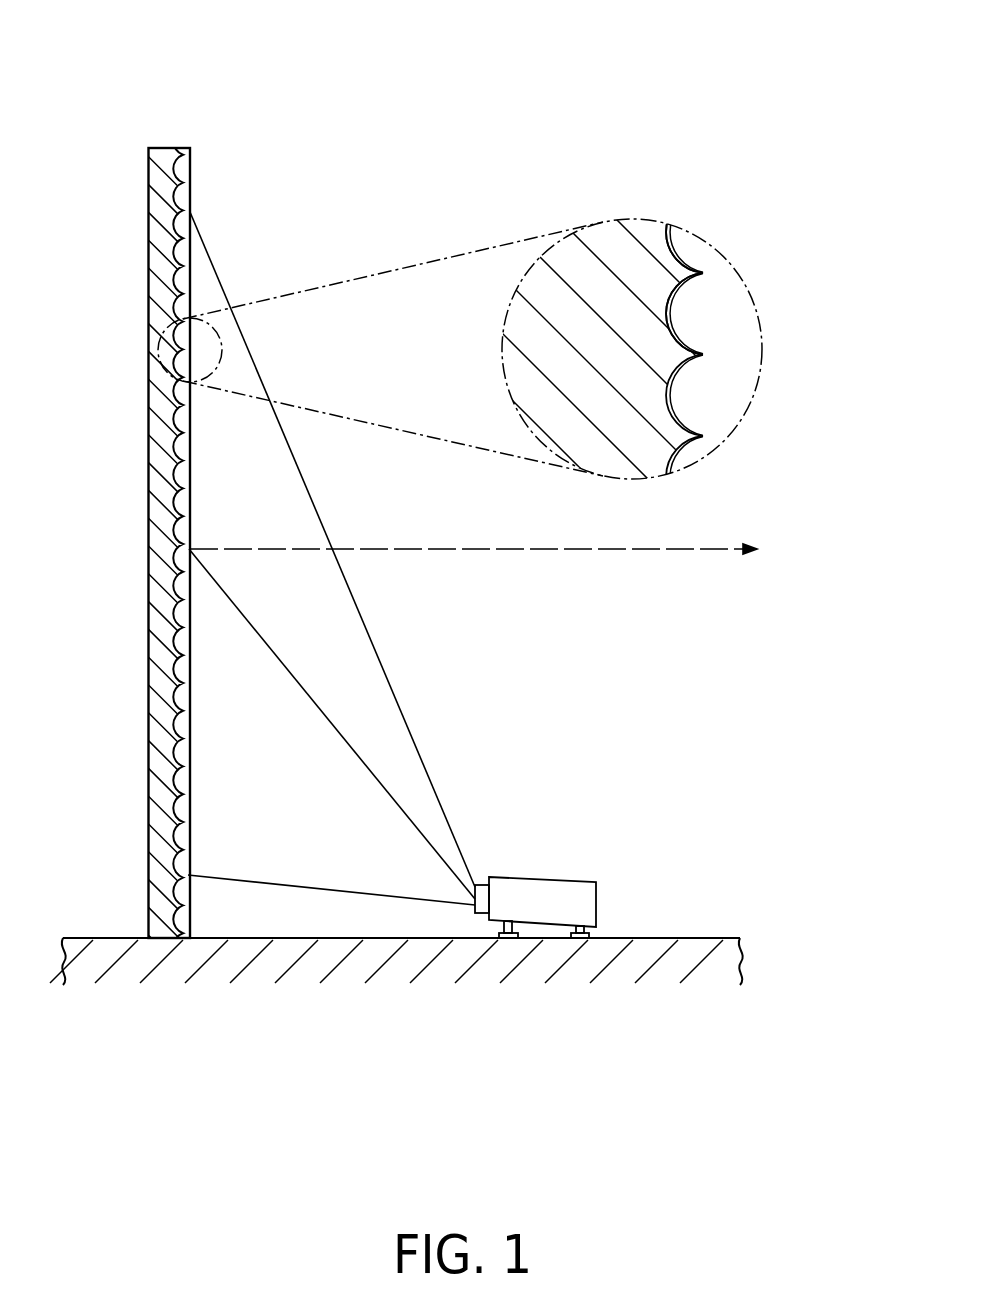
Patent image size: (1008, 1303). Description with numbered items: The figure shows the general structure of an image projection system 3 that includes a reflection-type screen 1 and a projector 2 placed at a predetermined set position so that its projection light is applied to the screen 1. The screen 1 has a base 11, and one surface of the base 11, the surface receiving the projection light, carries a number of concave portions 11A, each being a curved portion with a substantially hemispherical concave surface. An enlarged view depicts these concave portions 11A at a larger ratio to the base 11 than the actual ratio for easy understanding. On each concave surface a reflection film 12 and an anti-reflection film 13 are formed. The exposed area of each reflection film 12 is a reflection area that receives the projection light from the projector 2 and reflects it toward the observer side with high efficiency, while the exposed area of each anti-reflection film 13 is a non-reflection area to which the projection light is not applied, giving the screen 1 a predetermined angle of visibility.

The screen 1 is at (172, 148).
The projector 2 is at (540, 877).
The image projection system 3 is at (391, 85).
The base 11 is at (623, 229).
The concave portion 11A is at (692, 412).
The reflection film 12 is at (694, 290).
The anti-reflection film 13 is at (693, 335).